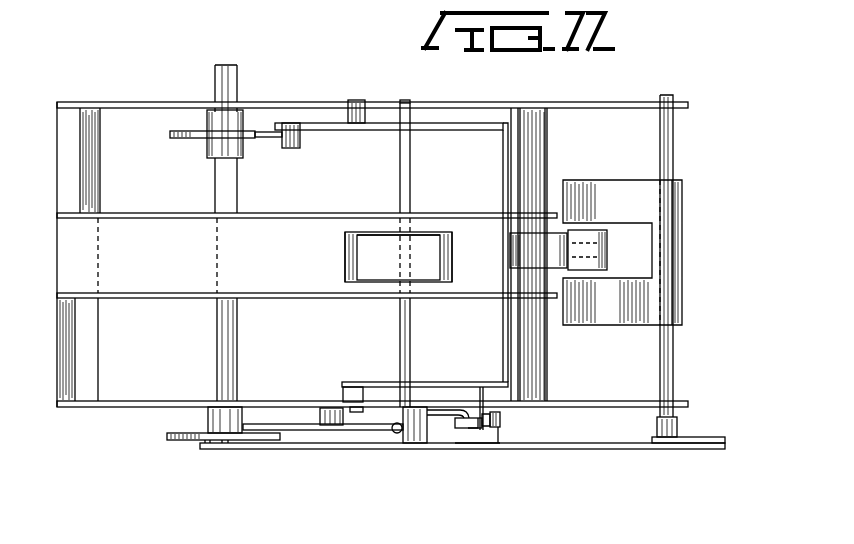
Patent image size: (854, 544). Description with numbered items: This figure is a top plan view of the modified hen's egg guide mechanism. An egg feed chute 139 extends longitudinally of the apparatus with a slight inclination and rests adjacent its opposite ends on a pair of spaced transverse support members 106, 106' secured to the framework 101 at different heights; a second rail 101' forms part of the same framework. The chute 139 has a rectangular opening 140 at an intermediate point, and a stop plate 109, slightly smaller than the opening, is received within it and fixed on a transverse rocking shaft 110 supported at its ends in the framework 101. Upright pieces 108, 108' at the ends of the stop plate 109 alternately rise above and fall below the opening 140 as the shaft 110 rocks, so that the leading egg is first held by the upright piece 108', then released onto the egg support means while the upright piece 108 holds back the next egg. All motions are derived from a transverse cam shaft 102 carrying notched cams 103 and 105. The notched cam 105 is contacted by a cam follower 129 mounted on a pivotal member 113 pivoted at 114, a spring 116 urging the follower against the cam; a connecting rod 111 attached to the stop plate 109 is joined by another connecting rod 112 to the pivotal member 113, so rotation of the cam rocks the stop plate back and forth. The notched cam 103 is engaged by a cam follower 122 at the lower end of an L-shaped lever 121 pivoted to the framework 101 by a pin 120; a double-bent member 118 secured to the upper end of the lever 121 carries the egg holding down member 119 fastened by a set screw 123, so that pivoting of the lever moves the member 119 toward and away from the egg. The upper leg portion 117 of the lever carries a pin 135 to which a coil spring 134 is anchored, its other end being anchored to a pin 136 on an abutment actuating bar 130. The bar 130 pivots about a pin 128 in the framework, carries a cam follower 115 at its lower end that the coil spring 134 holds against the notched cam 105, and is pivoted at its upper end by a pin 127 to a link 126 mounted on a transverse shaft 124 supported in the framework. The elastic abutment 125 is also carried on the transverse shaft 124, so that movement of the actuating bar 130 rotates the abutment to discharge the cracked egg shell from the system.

The framework 101 is at (372, 86).
The bottom rail 101' is at (372, 278).
The transverse cam shaft 102 is at (238, 343).
The notched cam 103 is at (170, 135).
The notched cam 105 is at (178, 440).
The transverse support member 106 is at (105, 254).
The transverse support member 106' is at (562, 254).
The upright piece 108 is at (321, 257).
The upright piece 108' is at (475, 259).
The stop plate 109 is at (433, 250).
The transverse rocking shaft 110 is at (411, 333).
The connecting rod 111 is at (448, 410).
The connecting rod 112 is at (474, 430).
The pivotal member 113 is at (382, 431).
The pivot 114 is at (335, 425).
The cam follower 115 is at (207, 449).
The spring 116 is at (397, 434).
The upper leg portion 117 is at (448, 123).
The double-bent member 118 is at (538, 258).
The egg holding down member 119 is at (590, 233).
The pin 120 is at (382, 82).
The L-shaped lever 121 is at (322, 123).
The cam follower 122 is at (300, 148).
The set screw 123 is at (600, 250).
The transverse shaft 124 is at (674, 355).
The elastic abutment 125 is at (653, 202).
The link 126 is at (705, 437).
The pin 127 is at (714, 449).
The pin 128 is at (417, 445).
The cam follower 129 is at (225, 449).
The abutment actuating bar 130 is at (517, 450).
The coil spring 134 is at (502, 421).
The pin 135 is at (485, 395).
The pin 136 is at (505, 432).
The egg feed chute 139 is at (308, 298).
The rectangular opening 140 is at (425, 232).